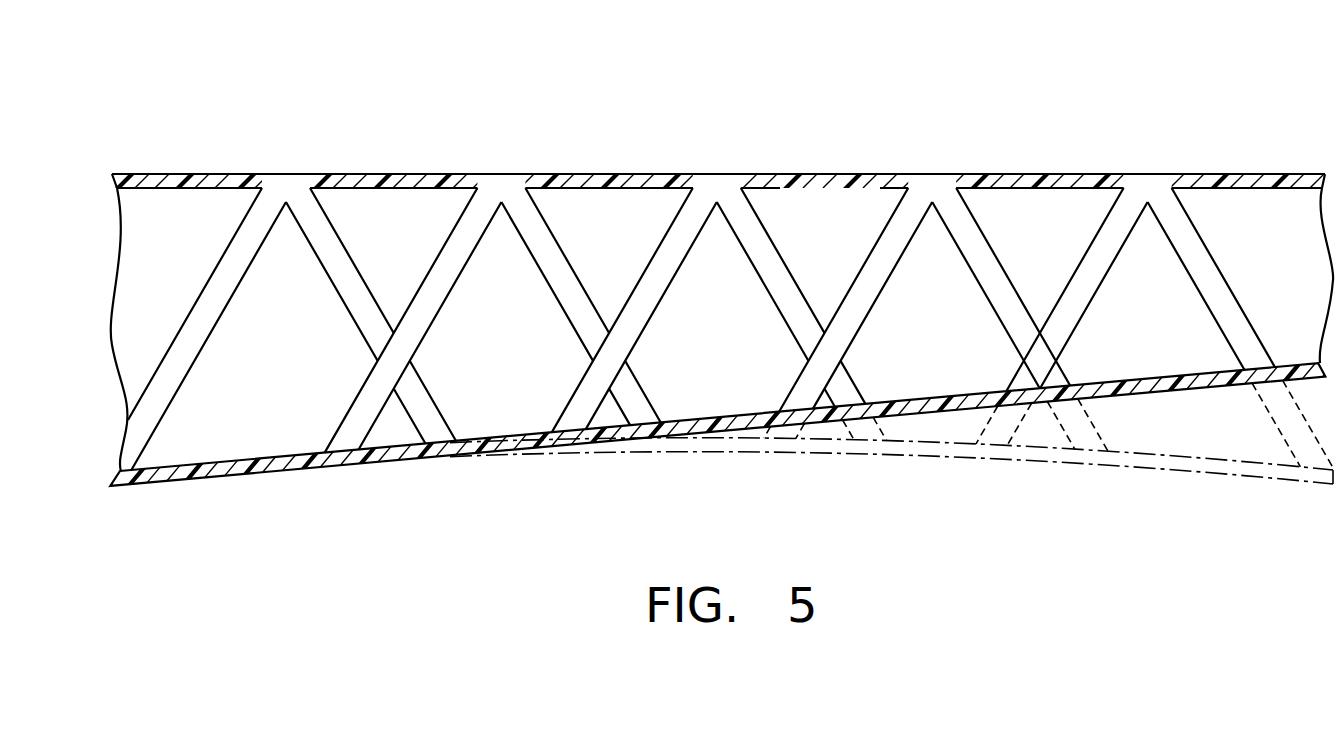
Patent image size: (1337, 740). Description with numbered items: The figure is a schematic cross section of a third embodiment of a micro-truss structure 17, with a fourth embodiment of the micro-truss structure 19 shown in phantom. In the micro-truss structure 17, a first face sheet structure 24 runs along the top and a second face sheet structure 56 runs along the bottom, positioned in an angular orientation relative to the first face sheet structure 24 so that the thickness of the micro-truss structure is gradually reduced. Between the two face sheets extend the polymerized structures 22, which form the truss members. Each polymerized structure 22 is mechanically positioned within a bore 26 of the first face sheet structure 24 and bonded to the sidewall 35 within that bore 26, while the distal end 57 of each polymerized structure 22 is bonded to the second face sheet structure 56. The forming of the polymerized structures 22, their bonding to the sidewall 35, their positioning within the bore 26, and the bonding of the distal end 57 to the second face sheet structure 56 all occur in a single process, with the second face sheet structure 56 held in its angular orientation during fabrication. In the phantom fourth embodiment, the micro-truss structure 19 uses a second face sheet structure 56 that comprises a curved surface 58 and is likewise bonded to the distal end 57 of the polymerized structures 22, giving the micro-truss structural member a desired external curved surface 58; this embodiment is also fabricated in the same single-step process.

The micro-truss structure 17 is at (717, 302).
The micro-truss structure 19 is at (913, 468).
The polymerized structure 22 is at (642, 300).
The first face sheet structure 24 is at (817, 180).
The bore 26 is at (716, 176).
The sidewall 35 is at (957, 178).
The second face sheet structure 56 is at (1167, 385).
The distal end 57 is at (327, 451).
The curved surface 58 is at (943, 455).